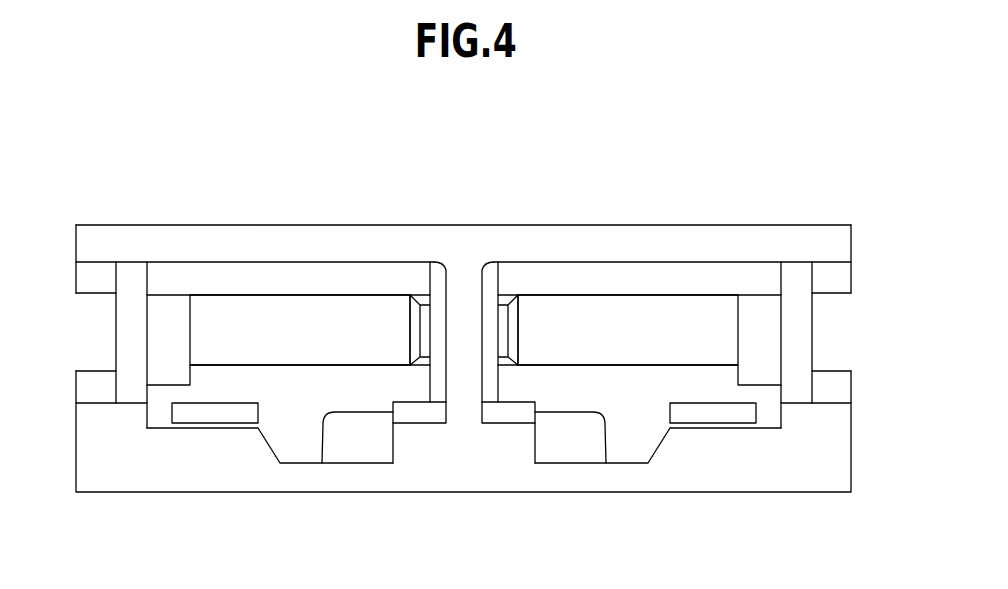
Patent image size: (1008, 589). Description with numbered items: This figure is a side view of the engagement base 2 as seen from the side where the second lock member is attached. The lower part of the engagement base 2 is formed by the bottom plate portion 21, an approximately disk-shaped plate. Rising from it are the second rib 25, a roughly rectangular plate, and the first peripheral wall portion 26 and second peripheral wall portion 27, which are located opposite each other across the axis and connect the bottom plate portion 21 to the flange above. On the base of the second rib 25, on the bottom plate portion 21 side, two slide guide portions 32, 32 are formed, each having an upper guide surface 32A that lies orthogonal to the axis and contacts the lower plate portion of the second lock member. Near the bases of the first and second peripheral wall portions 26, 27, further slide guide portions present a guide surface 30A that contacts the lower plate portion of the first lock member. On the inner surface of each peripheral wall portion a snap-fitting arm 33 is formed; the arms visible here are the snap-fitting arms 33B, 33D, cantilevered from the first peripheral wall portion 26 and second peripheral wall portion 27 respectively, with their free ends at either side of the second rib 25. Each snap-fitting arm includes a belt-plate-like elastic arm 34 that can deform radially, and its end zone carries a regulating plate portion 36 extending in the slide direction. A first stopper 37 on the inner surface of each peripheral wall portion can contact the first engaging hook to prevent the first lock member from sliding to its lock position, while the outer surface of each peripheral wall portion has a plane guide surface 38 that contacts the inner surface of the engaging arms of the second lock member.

The engagement base 2 is at (143, 205).
The bottom plate portion 21 is at (291, 480).
The second rib 25 is at (457, 330).
The first peripheral wall portion 26 is at (125, 337).
The second peripheral wall portion 27 is at (802, 332).
The guide surface 30A is at (225, 403).
The slide guide portion 32 is at (418, 415).
The guide surface 32A is at (403, 402).
The snap-fitting arm 33 is at (464, 258).
The snap-fitting arm 33B is at (300, 293).
The snap-fitting arm 33D is at (568, 293).
The elastic arm 34 is at (257, 320).
The regulating plate portion 36 is at (418, 323).
The first stopper 37 is at (167, 354).
The guide surface 38 is at (115, 315).